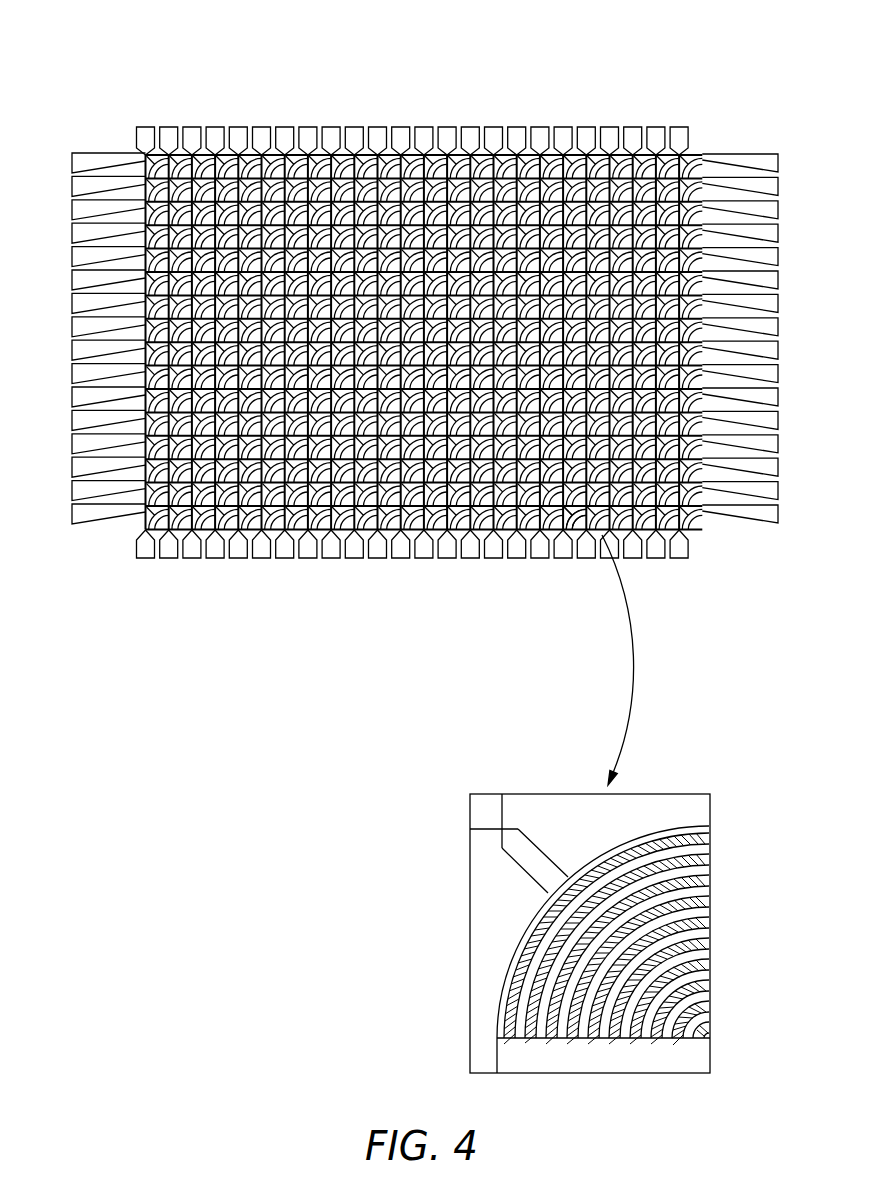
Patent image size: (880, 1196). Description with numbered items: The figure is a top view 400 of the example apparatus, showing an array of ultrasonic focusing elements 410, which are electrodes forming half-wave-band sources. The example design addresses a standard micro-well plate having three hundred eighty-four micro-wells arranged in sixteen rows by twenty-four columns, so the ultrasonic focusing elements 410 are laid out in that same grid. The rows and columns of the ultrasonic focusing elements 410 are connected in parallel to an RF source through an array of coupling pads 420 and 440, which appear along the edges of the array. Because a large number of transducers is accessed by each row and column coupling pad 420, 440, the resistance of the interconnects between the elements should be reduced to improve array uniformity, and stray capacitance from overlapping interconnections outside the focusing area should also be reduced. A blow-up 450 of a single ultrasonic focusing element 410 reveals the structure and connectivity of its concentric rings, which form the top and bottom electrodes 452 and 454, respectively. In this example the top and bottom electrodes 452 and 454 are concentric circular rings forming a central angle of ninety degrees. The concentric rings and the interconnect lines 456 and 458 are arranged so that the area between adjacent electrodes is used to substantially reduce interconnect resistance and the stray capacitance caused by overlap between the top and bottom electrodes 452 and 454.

The top view 400 is at (692, 83).
The ultrasonic focusing element 410 is at (570, 536).
The coupling pad 420 is at (742, 153).
The coupling pad 440 is at (608, 126).
The blow-up 450 is at (692, 771).
The top electrode 452 is at (710, 838).
The bottom electrode 454 is at (710, 889).
The interconnect line 456 is at (628, 837).
The interconnect line 458 is at (497, 1008).